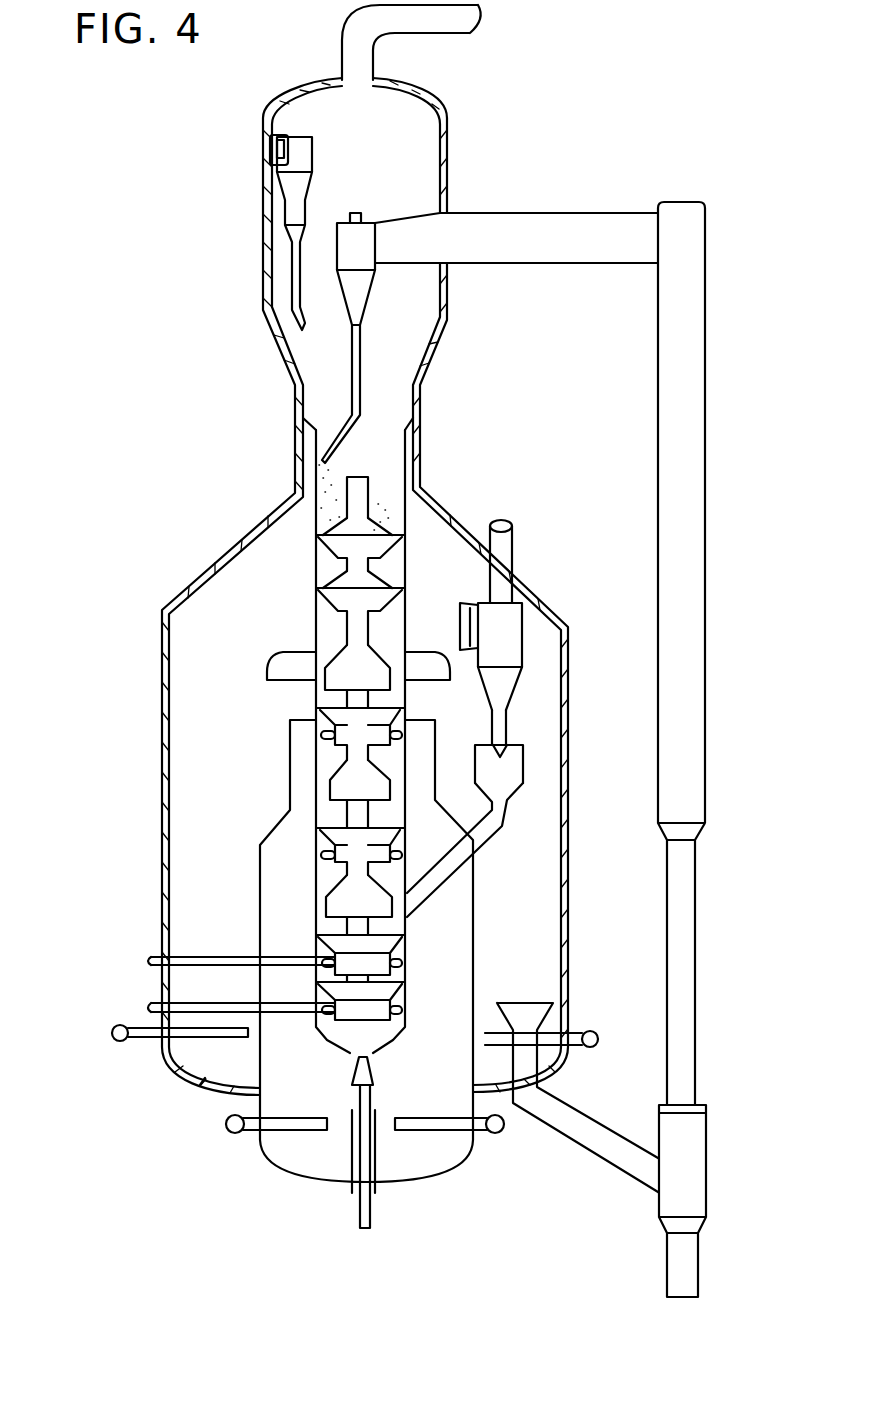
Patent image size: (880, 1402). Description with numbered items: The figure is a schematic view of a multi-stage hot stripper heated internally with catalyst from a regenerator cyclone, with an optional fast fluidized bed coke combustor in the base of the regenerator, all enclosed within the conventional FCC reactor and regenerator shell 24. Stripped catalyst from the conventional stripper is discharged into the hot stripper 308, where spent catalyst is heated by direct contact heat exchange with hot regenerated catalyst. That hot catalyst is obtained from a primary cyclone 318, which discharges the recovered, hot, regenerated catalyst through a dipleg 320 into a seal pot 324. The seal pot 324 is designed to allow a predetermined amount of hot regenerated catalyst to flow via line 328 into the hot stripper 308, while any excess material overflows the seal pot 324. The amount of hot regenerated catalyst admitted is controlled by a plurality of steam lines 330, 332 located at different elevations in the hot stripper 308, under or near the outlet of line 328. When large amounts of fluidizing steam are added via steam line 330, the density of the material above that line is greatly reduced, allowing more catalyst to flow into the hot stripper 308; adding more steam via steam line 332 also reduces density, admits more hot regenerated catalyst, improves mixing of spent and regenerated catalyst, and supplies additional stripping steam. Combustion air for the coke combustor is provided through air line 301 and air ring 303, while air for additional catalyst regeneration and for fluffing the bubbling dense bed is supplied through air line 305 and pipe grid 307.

The regenerator shell 24 is at (572, 716).
The air line 301 is at (232, 1133).
The air ring 303 is at (292, 1133).
The air line 305 is at (118, 1042).
The pipe grid 307 is at (212, 1043).
The hot stripper 308 is at (313, 694).
The primary cyclone 318 is at (523, 648).
The dipleg 320 is at (507, 727).
The seal pot 324 is at (523, 768).
The line 328 is at (500, 825).
The steam line 330 is at (158, 957).
The steam line 332 is at (162, 1005).